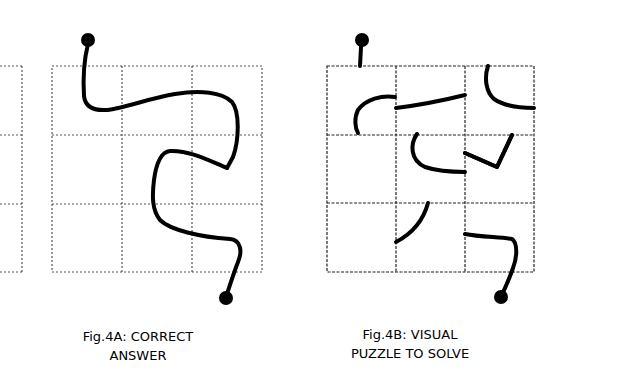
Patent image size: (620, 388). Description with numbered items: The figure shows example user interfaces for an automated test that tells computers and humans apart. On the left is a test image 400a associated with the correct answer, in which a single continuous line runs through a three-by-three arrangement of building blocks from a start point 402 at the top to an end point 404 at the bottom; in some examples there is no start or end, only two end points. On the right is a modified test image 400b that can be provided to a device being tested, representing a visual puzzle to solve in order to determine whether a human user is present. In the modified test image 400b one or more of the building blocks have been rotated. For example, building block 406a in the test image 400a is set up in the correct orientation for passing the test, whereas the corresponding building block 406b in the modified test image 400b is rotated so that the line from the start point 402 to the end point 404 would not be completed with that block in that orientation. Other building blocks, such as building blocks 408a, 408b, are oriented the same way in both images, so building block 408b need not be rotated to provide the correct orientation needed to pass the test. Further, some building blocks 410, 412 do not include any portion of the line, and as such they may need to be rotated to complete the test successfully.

In FIG. 4A, the test image 400a is at (179, 48).
In FIG. 4B, the modified test image 400b is at (448, 49).
In FIG. 4A, the start point 402 is at (80, 37).
In FIG. 4B, the start point 402 is at (354, 38).
In FIG. 4A, the end point 404 is at (218, 297).
In FIG. 4B, the end point 404 is at (493, 297).
In FIG. 4A, the building block 406a is at (230, 79).
In FIG. 4B, the building block 406b is at (517, 78).
In FIG. 4A, the building block 408a is at (230, 177).
In FIG. 4B, the building block 408b is at (523, 138).
In FIG. 4B, the building block 410 is at (350, 260).
In FIG. 4B, the building block 412 is at (350, 157).